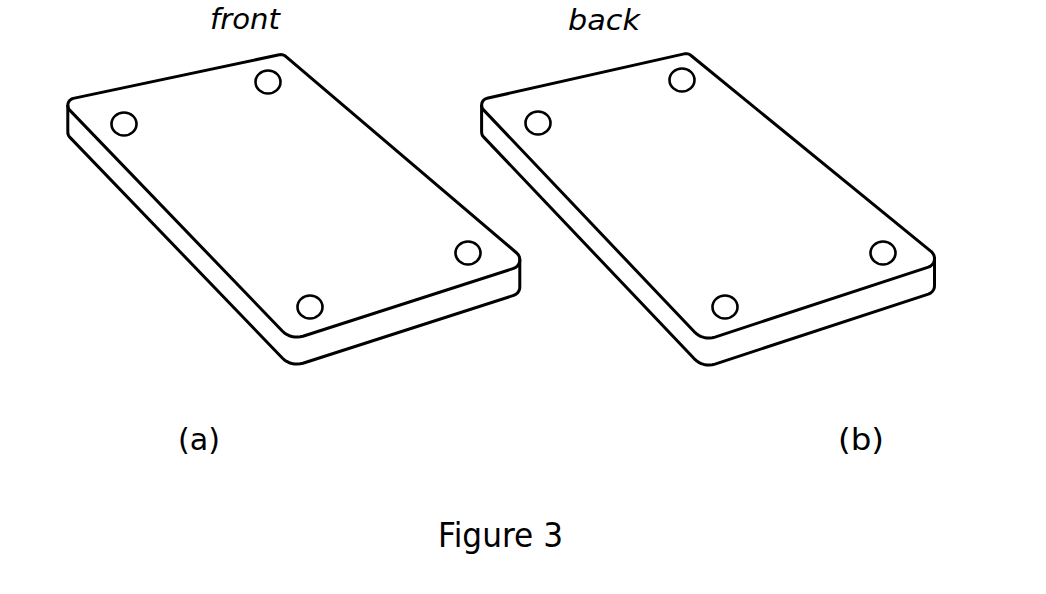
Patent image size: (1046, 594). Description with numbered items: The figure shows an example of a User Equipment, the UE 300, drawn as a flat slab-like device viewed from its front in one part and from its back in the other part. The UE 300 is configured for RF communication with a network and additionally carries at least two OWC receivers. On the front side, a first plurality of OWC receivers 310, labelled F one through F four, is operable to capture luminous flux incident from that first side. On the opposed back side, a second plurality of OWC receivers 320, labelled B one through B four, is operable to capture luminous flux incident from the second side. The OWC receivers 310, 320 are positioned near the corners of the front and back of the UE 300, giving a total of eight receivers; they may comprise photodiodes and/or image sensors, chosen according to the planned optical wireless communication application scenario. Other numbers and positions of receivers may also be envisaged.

In FIG. 3a, the UE 300 is at (347, 103).
In FIG. 3b, the UE 300 is at (752, 97).
In FIG. 3a, the first plurality of OWC receivers 310 is at (119, 111).
In FIG. 3b, the second plurality of OWC receivers 320 is at (538, 111).